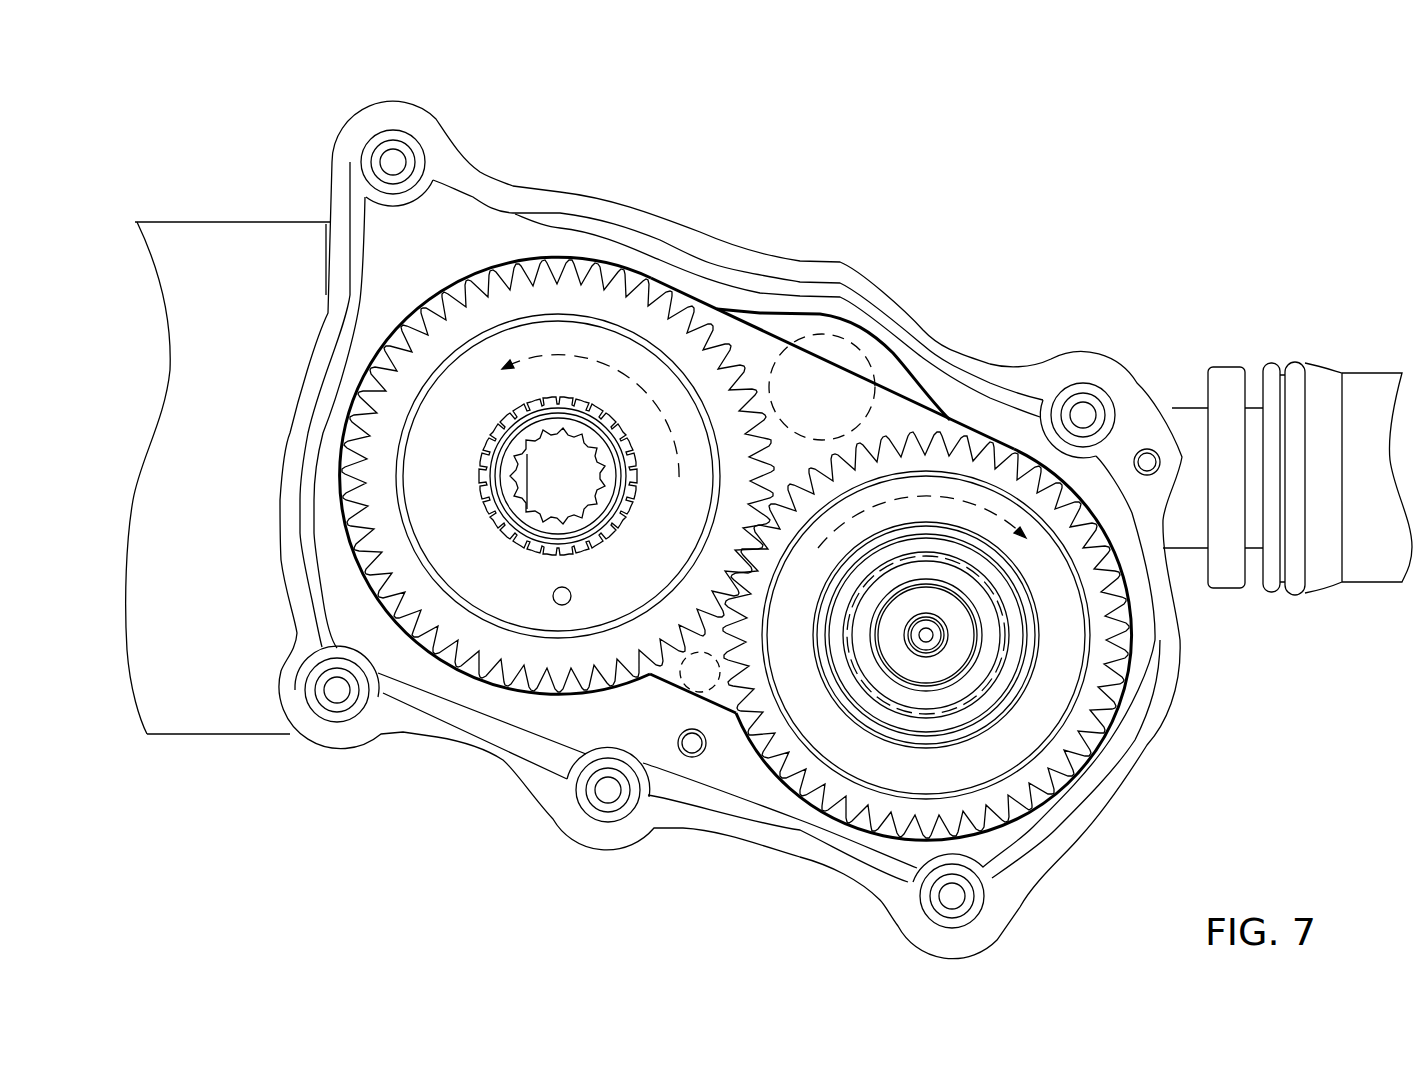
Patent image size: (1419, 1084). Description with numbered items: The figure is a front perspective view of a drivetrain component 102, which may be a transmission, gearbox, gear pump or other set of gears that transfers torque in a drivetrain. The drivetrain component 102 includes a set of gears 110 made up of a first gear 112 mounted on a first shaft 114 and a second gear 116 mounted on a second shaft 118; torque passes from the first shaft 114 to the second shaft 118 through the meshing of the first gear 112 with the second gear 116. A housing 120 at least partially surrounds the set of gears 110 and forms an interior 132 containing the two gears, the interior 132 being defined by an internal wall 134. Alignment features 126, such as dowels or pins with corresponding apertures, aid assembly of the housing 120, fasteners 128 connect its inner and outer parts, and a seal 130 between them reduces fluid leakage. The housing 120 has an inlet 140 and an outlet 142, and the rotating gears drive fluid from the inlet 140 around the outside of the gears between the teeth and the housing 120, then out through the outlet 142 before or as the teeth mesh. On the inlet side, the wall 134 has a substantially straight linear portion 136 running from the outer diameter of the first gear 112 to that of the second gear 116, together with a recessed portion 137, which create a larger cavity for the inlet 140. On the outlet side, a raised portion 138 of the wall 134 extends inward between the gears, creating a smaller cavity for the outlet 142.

The drivetrain component 102 is at (612, 118).
The set of gears 110 is at (708, 137).
The first gear 112 is at (1035, 732).
The first shaft 114 is at (958, 627).
The second gear 116 is at (346, 528).
The second shaft 118 is at (550, 483).
The housing 120 is at (946, 228).
The alignment features 126 is at (1148, 455).
The fasteners 128 is at (371, 140).
The seal 130 is at (400, 317).
The interior 132 is at (940, 420).
The wall 134 is at (940, 420).
The linear portion 136 is at (692, 293).
The recessed portion 137 is at (893, 370).
The raised portion 138 is at (717, 698).
The inlet 140 is at (822, 334).
The outlet 142 is at (686, 686).